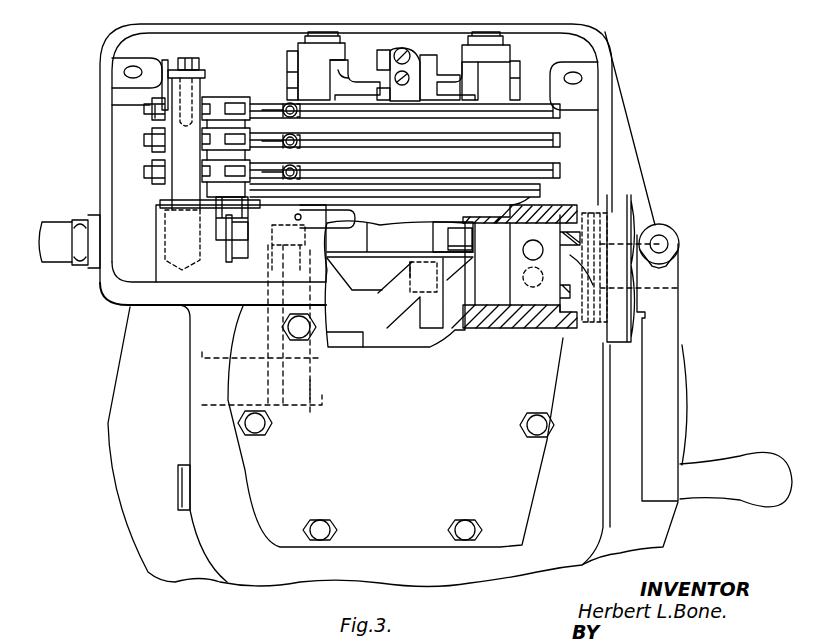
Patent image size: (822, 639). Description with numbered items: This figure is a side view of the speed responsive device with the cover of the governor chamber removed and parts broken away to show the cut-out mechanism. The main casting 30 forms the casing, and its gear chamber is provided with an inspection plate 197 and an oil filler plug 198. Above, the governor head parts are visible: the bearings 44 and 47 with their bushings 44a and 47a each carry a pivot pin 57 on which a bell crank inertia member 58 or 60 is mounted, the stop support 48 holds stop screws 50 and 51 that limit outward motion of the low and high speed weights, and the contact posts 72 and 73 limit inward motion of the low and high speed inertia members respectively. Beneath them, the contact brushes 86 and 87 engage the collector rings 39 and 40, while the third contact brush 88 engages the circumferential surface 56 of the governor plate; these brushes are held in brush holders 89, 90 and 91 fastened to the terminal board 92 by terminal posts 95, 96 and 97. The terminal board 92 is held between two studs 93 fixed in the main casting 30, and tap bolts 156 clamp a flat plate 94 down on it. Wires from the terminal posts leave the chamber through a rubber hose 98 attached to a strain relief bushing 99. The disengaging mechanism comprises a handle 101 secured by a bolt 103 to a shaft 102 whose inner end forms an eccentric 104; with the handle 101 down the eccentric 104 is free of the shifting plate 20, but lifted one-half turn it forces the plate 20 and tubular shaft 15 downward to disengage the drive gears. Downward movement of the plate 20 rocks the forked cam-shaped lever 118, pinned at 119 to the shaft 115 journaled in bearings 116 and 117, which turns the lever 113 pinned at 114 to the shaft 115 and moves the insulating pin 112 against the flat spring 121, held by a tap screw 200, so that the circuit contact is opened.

The main casting 30 is at (100, 74).
The rubber hose 98 is at (52, 262).
The strain relief bushing 99 is at (78, 265).
The flat plate 94 is at (165, 100).
The tap bolts 156 is at (190, 58).
The terminal board 92 is at (205, 84).
The terminal post 97 is at (144, 110).
The terminal post 95 is at (144, 140).
The terminal post 96 is at (144, 172).
The brush holder 91 is at (225, 100).
The pin 112 is at (209, 181).
The studs 93 is at (160, 203).
The circumferential surface 56 is at (553, 116).
The collector ring 39 is at (553, 143).
The collector ring 40 is at (553, 174).
The brush holder 89 is at (292, 117).
The contact brush 88 is at (307, 124).
The contact brush 86 is at (292, 147).
The contact brush 87 is at (322, 166).
The contact post 73 is at (287, 68).
The bearing 47 is at (298, 50).
The bushing 47a is at (340, 39).
The pivot pin 57 is at (358, 70).
The inertia member 60 is at (369, 76).
The stop support 48 is at (404, 49).
The stop screw 50 is at (413, 51).
The stop screw 51 is at (402, 86).
The inertia member 58 is at (442, 72).
The bearing 44 is at (510, 50).
The bushing 44a is at (506, 38).
The contact post 72 is at (520, 70).
The tap screw 200 is at (228, 272).
The flat spring 121 is at (222, 258).
The brush holder 90 is at (248, 222).
The pin connection 114 is at (295, 247).
The lever 113 is at (329, 217).
The bearing 117 is at (338, 236).
The eccentric 104 is at (445, 240).
The shifting plate 20 is at (463, 280).
The forked cam-shaped lever 118 is at (380, 326).
The tubular shaft 15 is at (365, 344).
The pin connection 119 is at (298, 345).
The bearing 116 is at (322, 400).
The shaft 115 is at (310, 414).
The bolt 103 is at (680, 244).
The shaft 102 is at (675, 296).
The handle 101 is at (735, 470).
The inspection plate 197 is at (247, 462).
The oil filler plug 198 is at (178, 480).